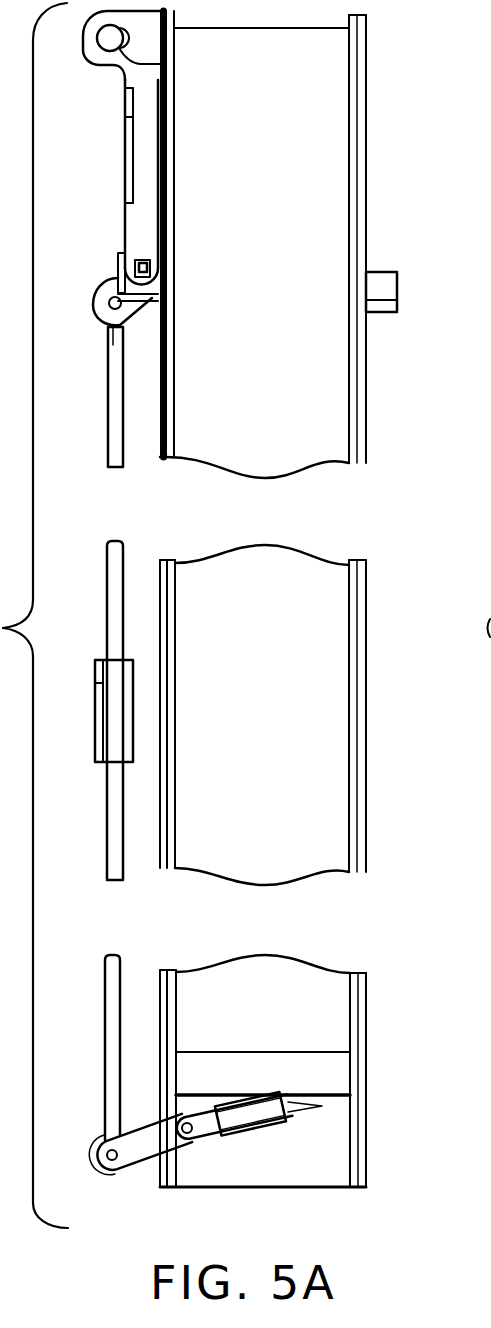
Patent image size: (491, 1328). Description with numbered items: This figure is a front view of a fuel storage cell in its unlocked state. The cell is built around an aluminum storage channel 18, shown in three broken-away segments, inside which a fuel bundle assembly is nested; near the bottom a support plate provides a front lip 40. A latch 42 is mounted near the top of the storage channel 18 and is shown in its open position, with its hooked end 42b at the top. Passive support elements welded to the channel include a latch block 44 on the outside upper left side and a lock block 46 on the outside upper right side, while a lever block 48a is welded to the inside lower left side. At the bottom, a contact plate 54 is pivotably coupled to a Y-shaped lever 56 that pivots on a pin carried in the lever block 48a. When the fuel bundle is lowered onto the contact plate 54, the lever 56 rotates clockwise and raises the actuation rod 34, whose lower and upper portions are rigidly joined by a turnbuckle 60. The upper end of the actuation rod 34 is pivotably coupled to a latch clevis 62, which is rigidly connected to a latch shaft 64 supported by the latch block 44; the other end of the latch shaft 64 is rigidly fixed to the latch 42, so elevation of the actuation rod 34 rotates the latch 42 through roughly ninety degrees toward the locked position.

The storage channel 18 is at (327, 1018).
The actuation rod 34 is at (135, 637).
The front lip 40 is at (323, 1068).
The latch 42 is at (147, 142).
The hook end 42b is at (175, 67).
The latch block 44 is at (115, 280).
The lock block 46 is at (381, 280).
The lever block 48a is at (207, 1145).
The contact plate 54 is at (287, 1120).
The lever 56 is at (133, 1158).
The turnbuckle 60 is at (113, 677).
The latch clevis 62 is at (112, 340).
The latch shaft 64 is at (150, 262).